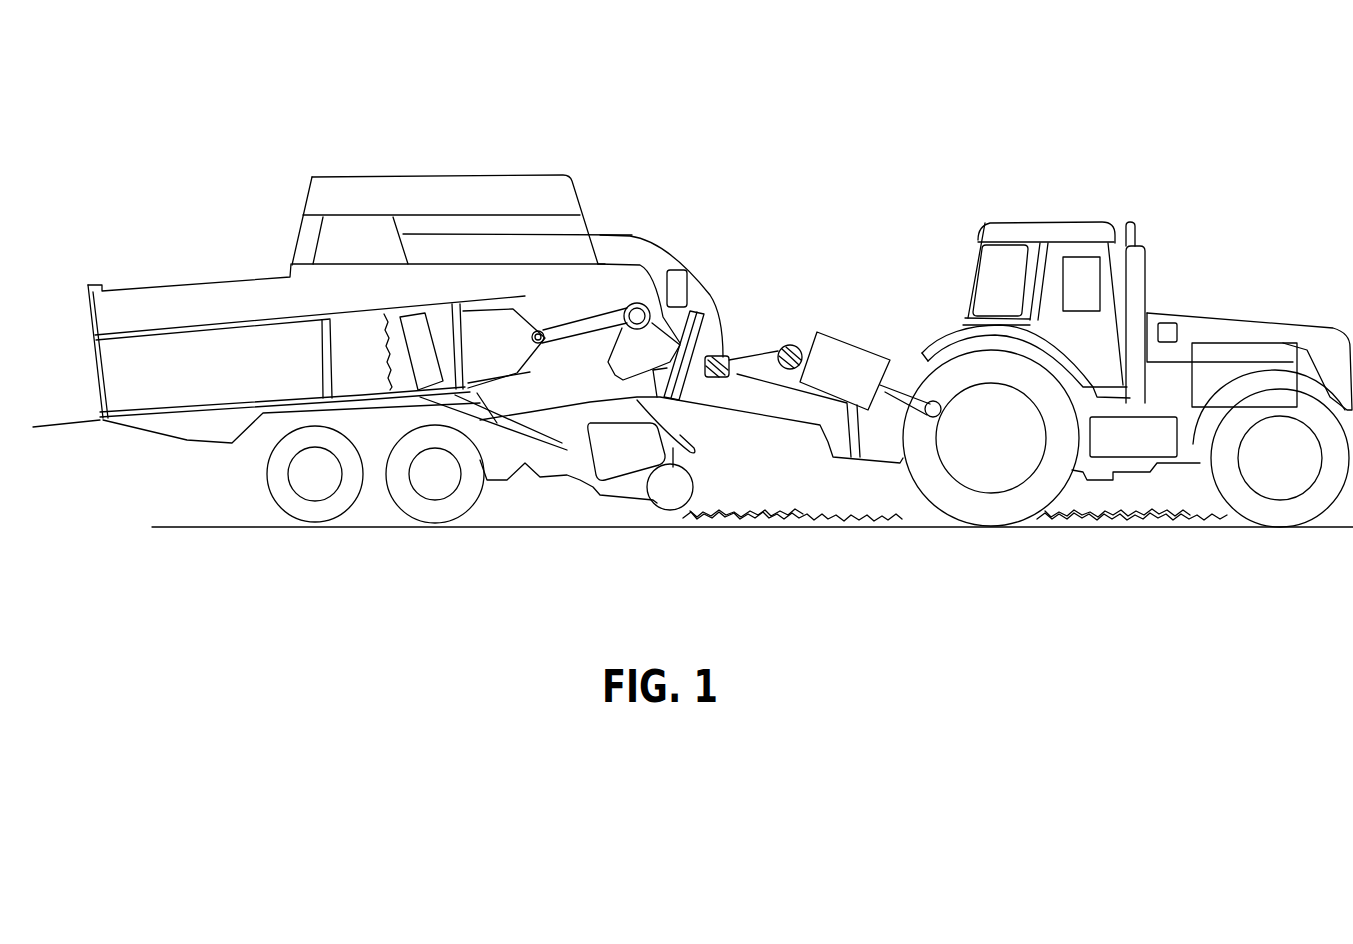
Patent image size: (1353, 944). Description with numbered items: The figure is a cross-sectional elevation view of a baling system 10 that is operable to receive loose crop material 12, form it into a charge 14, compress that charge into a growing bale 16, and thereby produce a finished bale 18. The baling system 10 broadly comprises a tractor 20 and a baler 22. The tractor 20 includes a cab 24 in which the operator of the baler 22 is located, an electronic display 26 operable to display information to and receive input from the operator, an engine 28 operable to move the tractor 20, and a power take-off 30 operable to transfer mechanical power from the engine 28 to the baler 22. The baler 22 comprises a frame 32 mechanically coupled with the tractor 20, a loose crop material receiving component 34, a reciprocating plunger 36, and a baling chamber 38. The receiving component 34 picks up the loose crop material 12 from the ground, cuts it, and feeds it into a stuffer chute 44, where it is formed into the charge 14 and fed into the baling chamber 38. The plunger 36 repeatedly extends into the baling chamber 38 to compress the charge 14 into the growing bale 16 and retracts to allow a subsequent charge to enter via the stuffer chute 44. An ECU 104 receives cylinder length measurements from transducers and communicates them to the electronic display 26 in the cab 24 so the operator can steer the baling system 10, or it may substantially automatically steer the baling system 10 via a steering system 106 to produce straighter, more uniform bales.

The baling system 10 is at (1212, 80).
The loose crop material 12 is at (742, 497).
The charge 14 is at (421, 333).
The growing bale 16 is at (348, 347).
The finished bale 18 is at (310, 356).
The tractor 20 is at (1248, 262).
The baler 22 is at (693, 207).
The cab 24 is at (1020, 210).
The electronic display 26 is at (1082, 282).
The engine 28 is at (1252, 355).
The power take-off (PTO) 30 is at (908, 382).
The frame 32 is at (755, 405).
The loose crop material receiving component 34 is at (640, 512).
The reciprocating plunger 36 is at (566, 346).
The baling chamber 38 is at (180, 422).
The stuffer chute 44 is at (502, 443).
The ECU 104 is at (683, 283).
The steering system 106 is at (1133, 437).